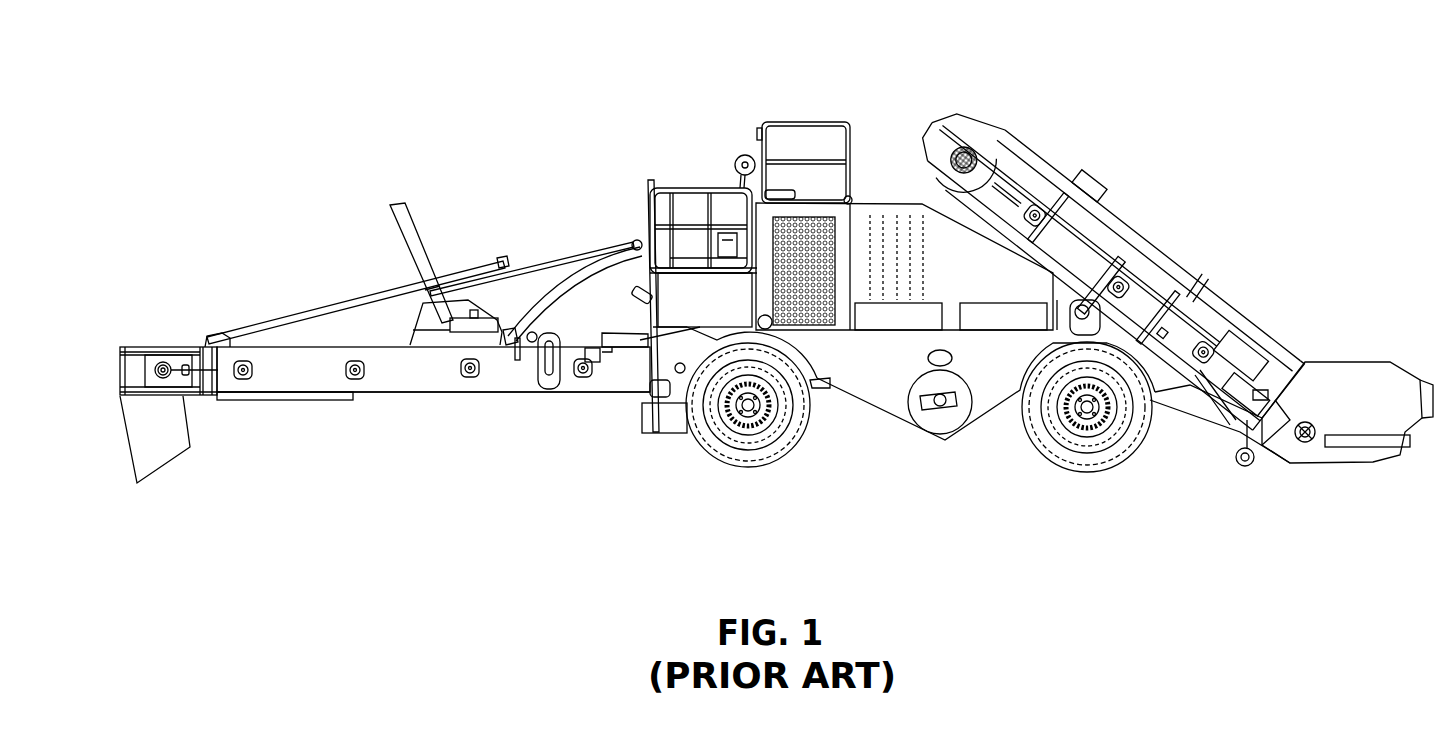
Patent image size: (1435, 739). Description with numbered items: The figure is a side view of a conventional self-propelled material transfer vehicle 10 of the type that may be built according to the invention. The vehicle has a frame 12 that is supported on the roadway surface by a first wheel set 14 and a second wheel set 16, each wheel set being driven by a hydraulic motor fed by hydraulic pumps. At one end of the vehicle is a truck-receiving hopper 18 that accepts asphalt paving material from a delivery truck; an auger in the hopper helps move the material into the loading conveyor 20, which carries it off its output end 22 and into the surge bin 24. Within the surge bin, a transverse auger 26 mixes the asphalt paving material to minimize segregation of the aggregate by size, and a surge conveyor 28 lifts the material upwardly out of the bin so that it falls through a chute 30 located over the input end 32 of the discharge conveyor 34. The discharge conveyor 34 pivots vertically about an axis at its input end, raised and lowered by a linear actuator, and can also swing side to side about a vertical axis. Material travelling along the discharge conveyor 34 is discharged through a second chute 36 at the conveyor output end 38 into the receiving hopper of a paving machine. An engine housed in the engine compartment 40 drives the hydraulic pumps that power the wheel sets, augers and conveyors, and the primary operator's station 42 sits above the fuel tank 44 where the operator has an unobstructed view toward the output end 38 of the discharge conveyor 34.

The material transfer vehicle 10 is at (1225, 118).
The frame 12 is at (819, 398).
The first wheel set 14 is at (1077, 467).
The second wheel set 16 is at (733, 470).
The truck-receiving hopper 18 is at (1332, 388).
The loading conveyor 20 is at (1093, 265).
The output end 22 is at (968, 118).
The surge bin 24 is at (905, 248).
The transverse auger 26 is at (935, 427).
The surge conveyor 28 is at (630, 268).
The chute 30 is at (618, 313).
The input end 32 is at (620, 400).
The discharge conveyor 34 is at (444, 378).
The chute 36 is at (123, 470).
The conveyor output end 38 is at (130, 338).
The engine compartment 40 is at (823, 222).
The primary operator's station 42 is at (713, 182).
The fuel tank 44 is at (692, 310).